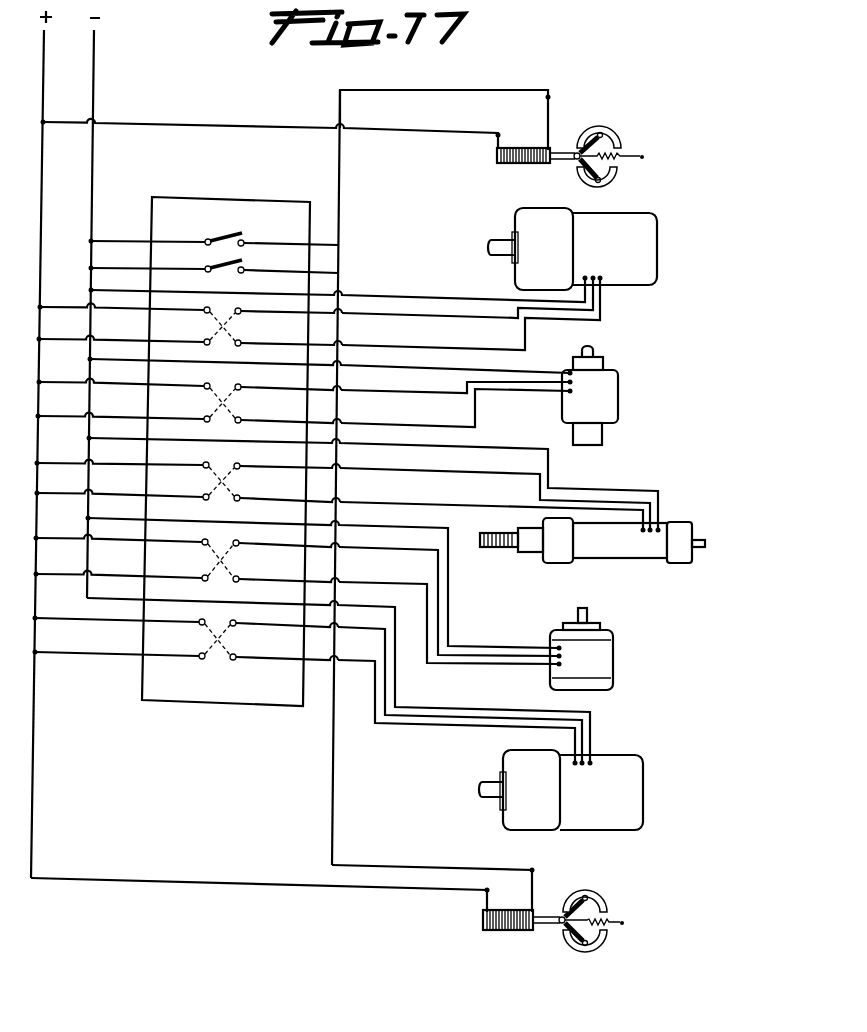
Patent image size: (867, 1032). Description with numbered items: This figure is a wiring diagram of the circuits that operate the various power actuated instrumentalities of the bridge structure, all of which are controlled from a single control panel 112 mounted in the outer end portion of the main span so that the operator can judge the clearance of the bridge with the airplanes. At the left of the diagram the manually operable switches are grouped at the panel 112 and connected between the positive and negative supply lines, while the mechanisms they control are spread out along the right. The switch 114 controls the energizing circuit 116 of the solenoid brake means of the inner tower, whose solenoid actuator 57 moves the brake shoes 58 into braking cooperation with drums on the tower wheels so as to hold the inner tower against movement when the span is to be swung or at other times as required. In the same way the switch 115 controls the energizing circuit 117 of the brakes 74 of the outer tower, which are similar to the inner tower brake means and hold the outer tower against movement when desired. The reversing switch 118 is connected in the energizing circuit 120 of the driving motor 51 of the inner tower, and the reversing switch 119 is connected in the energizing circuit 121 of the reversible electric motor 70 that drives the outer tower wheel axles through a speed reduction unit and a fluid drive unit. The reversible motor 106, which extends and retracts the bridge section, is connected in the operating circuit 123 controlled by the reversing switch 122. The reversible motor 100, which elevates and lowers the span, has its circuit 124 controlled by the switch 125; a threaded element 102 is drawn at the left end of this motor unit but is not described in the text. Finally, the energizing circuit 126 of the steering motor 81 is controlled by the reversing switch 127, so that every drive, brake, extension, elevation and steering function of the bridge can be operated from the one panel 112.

The control panel 112 is at (220, 197).
The switch 114 is at (217, 238).
The switch 115 is at (213, 257).
The reversing switch 118 is at (229, 323).
The reversing switch 122 is at (225, 400).
The switch 125 is at (222, 480).
The reversing switch 127 is at (226, 560).
The reversing switch 119 is at (222, 640).
The energizing circuit 116 is at (450, 132).
The solenoid actuator 57 is at (498, 163).
The shoes 58 is at (618, 133).
The driving motor 51 is at (643, 266).
The energizing circuit 120 is at (423, 318).
The operating circuit 123 is at (512, 378).
The reversible motor 106 is at (618, 399).
The circuit 124 is at (655, 470).
The reversible motor 100 is at (698, 528).
The screw 102 is at (498, 548).
The energizing circuit 126 is at (487, 657).
The steering motor 81 is at (602, 666).
The energizing circuit 121 is at (450, 718).
The reversible electric motor 70 is at (637, 814).
The energizing circuit 117 is at (420, 887).
The brakes 74 is at (512, 930).